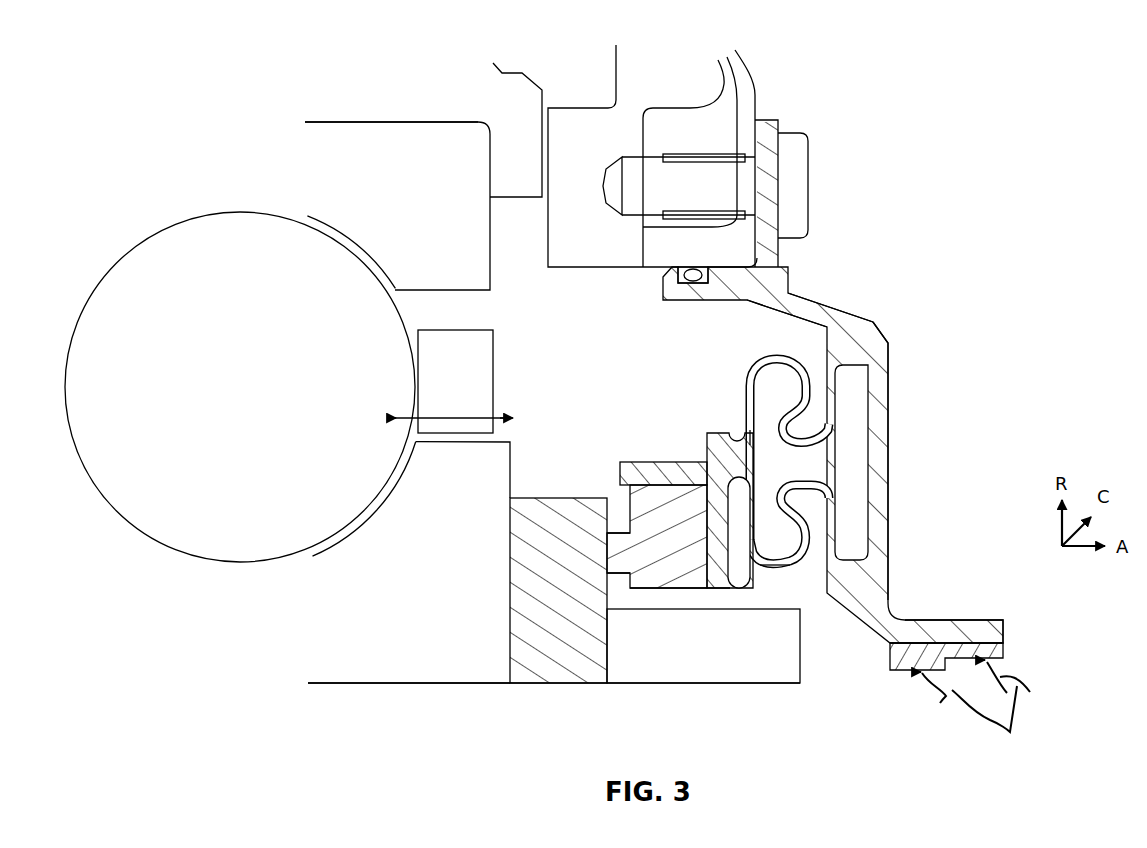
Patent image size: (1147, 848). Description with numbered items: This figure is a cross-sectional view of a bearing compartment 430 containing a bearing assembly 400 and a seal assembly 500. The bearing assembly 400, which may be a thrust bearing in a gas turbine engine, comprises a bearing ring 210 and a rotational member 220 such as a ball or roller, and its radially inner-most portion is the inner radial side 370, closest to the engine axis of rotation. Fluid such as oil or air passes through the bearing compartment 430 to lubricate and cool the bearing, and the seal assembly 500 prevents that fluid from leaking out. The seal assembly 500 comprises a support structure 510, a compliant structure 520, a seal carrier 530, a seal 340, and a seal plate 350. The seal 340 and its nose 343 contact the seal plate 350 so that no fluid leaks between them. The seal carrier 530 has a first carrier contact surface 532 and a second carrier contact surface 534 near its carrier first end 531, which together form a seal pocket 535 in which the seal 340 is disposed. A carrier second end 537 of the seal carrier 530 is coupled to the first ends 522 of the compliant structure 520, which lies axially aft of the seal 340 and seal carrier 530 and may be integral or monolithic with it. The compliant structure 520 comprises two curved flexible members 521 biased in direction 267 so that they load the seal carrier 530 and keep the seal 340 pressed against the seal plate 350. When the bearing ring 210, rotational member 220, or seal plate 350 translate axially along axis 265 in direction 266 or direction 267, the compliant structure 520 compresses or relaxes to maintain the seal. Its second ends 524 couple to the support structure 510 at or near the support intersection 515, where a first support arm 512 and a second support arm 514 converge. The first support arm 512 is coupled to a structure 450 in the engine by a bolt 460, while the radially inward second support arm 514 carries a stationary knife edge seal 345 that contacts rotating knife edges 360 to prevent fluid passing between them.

The bearing assembly 400 is at (286, 134).
The bearing ring 210 is at (433, 122).
The rotational member 220 is at (240, 387).
The axis 265 is at (458, 418).
The direction 266 is at (508, 428).
The direction 267 is at (388, 414).
The bearing compartment 430 is at (592, 352).
The structure 450 is at (747, 86).
The bolt 460 is at (802, 153).
The seal assembly 500 is at (880, 235).
The first support arm 512 is at (792, 297).
The support intersection 515 is at (876, 322).
The support structure 510 is at (893, 418).
The second support arm 514 is at (893, 565).
The compliant structure 520 is at (753, 488).
The flexible member 521 is at (777, 362).
The first ends 522 is at (748, 434).
The second ends 524 is at (831, 428).
The first carrier contact surface 532 is at (660, 480).
The seal carrier 530 is at (706, 473).
The carrier second end 537 is at (716, 433).
The seal pocket 535 is at (718, 520).
The second carrier contact surface 534 is at (710, 548).
The carrier first end 531 is at (720, 588).
The seal 340 is at (682, 575).
The nose 343 is at (617, 560).
The seal plate 350 is at (547, 637).
The inner radial side 370 is at (470, 732).
The knife edge seal 345 is at (1005, 650).
The knife edges 360 is at (977, 716).